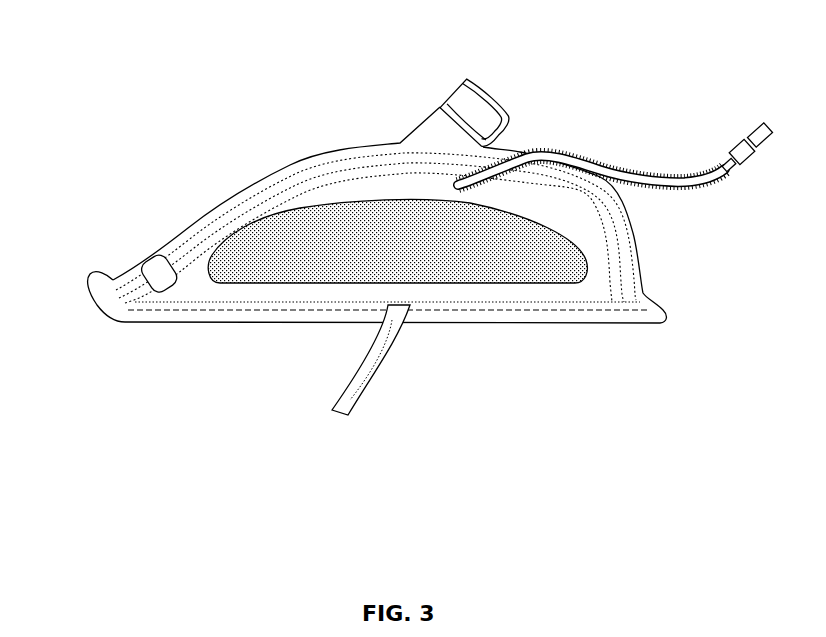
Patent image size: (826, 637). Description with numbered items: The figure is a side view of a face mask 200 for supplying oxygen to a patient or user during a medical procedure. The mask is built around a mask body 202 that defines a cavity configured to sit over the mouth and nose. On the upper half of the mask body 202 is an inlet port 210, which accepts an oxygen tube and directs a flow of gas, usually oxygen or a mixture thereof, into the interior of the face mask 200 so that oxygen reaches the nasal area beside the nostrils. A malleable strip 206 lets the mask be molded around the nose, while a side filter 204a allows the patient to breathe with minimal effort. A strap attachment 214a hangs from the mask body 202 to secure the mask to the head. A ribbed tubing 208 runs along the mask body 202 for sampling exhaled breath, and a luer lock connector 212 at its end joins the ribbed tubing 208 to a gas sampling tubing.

The face mask 200 is at (448, 285).
The mask body 202 is at (597, 285).
The side filter 204a is at (280, 268).
The malleable strip 206 is at (163, 262).
The ribbed tubing 208 is at (630, 167).
The inlet port 210 is at (458, 98).
The luer lock connector 212 is at (753, 153).
The strap attachment 214a is at (383, 363).